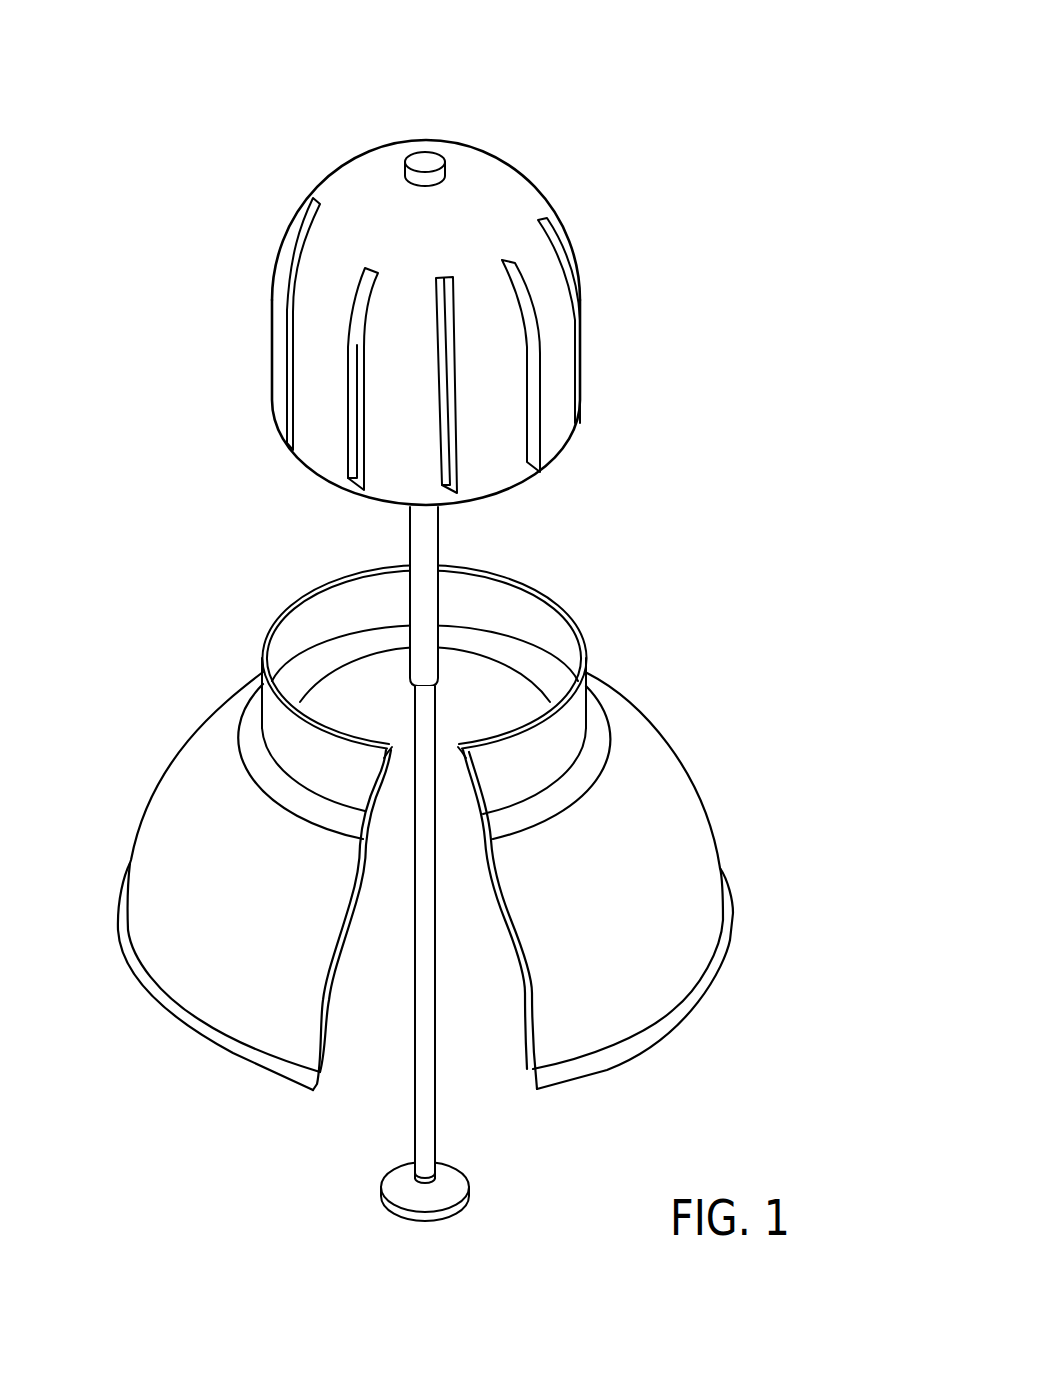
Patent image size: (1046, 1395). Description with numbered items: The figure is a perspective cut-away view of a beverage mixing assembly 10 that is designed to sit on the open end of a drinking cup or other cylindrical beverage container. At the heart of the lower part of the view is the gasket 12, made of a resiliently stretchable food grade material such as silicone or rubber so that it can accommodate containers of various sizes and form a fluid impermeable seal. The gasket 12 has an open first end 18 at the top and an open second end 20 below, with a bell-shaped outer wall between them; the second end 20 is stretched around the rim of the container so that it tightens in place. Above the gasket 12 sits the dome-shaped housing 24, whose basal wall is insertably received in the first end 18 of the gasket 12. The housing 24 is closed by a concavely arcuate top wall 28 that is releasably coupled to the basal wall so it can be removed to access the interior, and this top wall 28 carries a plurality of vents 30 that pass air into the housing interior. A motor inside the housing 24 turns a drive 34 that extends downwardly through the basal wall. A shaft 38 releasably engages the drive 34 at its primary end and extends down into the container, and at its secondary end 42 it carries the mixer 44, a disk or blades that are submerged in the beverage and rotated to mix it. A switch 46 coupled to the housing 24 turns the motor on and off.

The beverage mixing assembly 10 is at (612, 100).
The gasket 12 is at (167, 757).
The first end 18 is at (303, 597).
The second end 20 is at (452, 752).
The housing 24 is at (347, 187).
The top wall 28 is at (485, 178).
The vents 30 is at (353, 390).
The drive 34 is at (440, 545).
The shaft 38 is at (425, 1055).
The secondary end 42 is at (432, 1183).
The mixer 44 is at (397, 1213).
The switch 46 is at (425, 160).